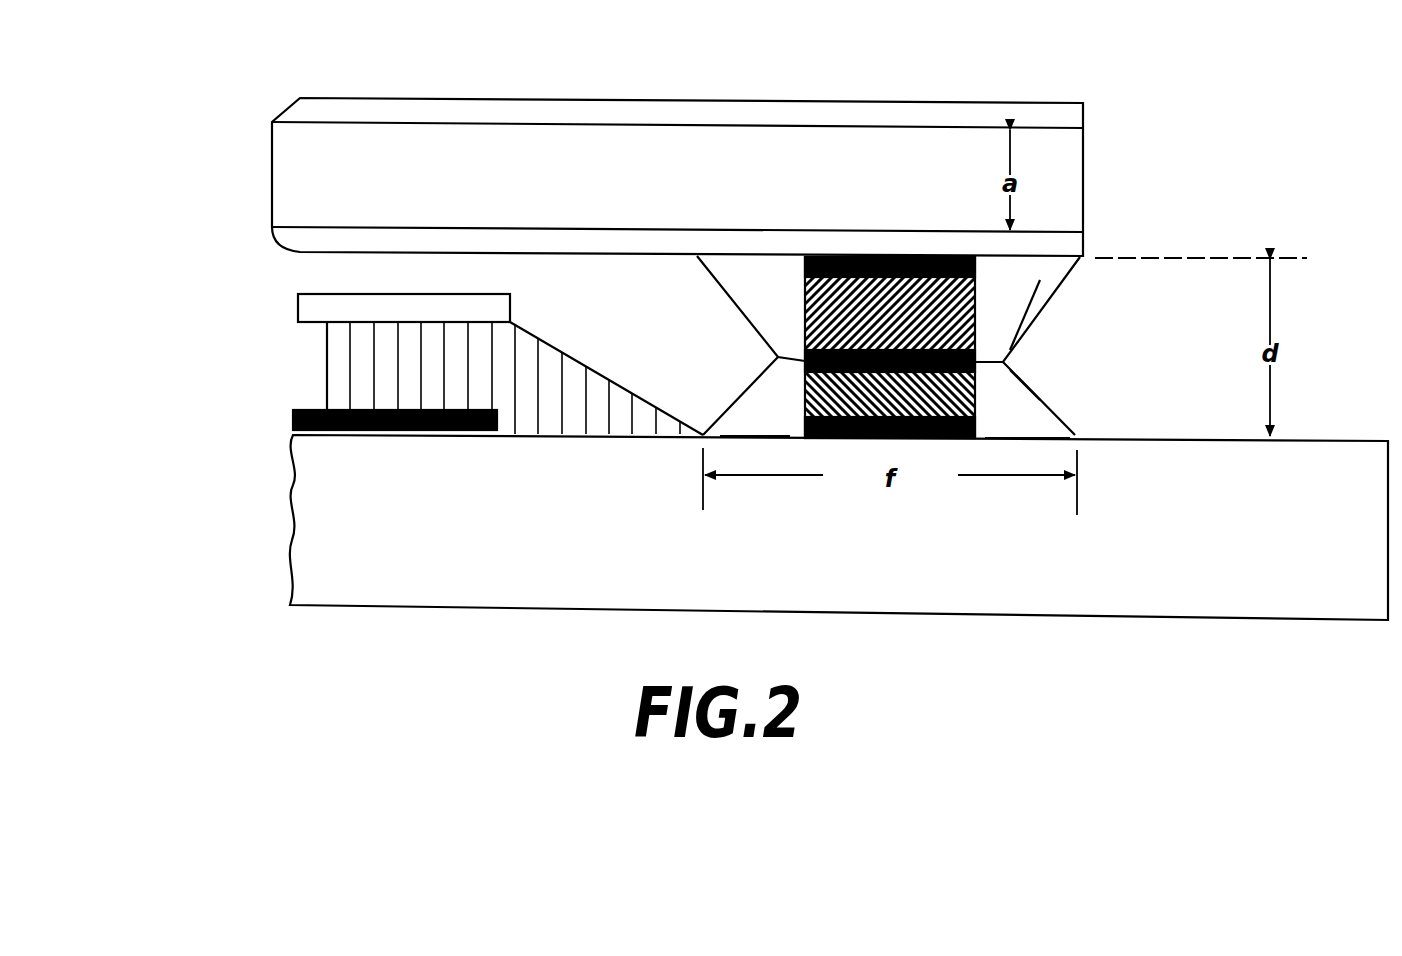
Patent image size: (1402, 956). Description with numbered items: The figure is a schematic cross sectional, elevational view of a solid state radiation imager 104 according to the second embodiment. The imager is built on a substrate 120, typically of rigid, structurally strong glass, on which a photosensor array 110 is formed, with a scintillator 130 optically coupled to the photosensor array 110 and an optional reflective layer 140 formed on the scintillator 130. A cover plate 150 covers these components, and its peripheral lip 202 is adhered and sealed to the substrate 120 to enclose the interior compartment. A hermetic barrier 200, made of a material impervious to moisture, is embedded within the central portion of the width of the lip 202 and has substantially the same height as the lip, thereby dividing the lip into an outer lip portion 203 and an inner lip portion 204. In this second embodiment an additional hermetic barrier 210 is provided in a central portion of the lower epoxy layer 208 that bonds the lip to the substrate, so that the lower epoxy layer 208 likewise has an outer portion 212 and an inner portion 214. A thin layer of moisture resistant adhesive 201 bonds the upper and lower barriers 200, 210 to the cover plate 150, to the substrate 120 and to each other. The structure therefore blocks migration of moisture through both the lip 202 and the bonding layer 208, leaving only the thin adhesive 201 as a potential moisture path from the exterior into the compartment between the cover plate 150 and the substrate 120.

The radiation imager 104 is at (706, 74).
The cover plate 150 is at (268, 97).
The reflective layer 140 is at (297, 309).
The scintillator 130 is at (326, 363).
The photosensor array 110 is at (292, 415).
The substrate 120 is at (290, 497).
The hermetic barrier 200 is at (807, 272).
The moisture resistant adhesive 201 is at (885, 262).
The outer lip portion 203 is at (1040, 277).
The additional hermetic barrier 210 is at (807, 403).
The inner lip portion 204 is at (751, 345).
The lip 202 is at (1050, 308).
The lower epoxy layer 208 is at (1037, 393).
The outer portion 212 is at (1023, 425).
The inner portion 214 is at (770, 417).